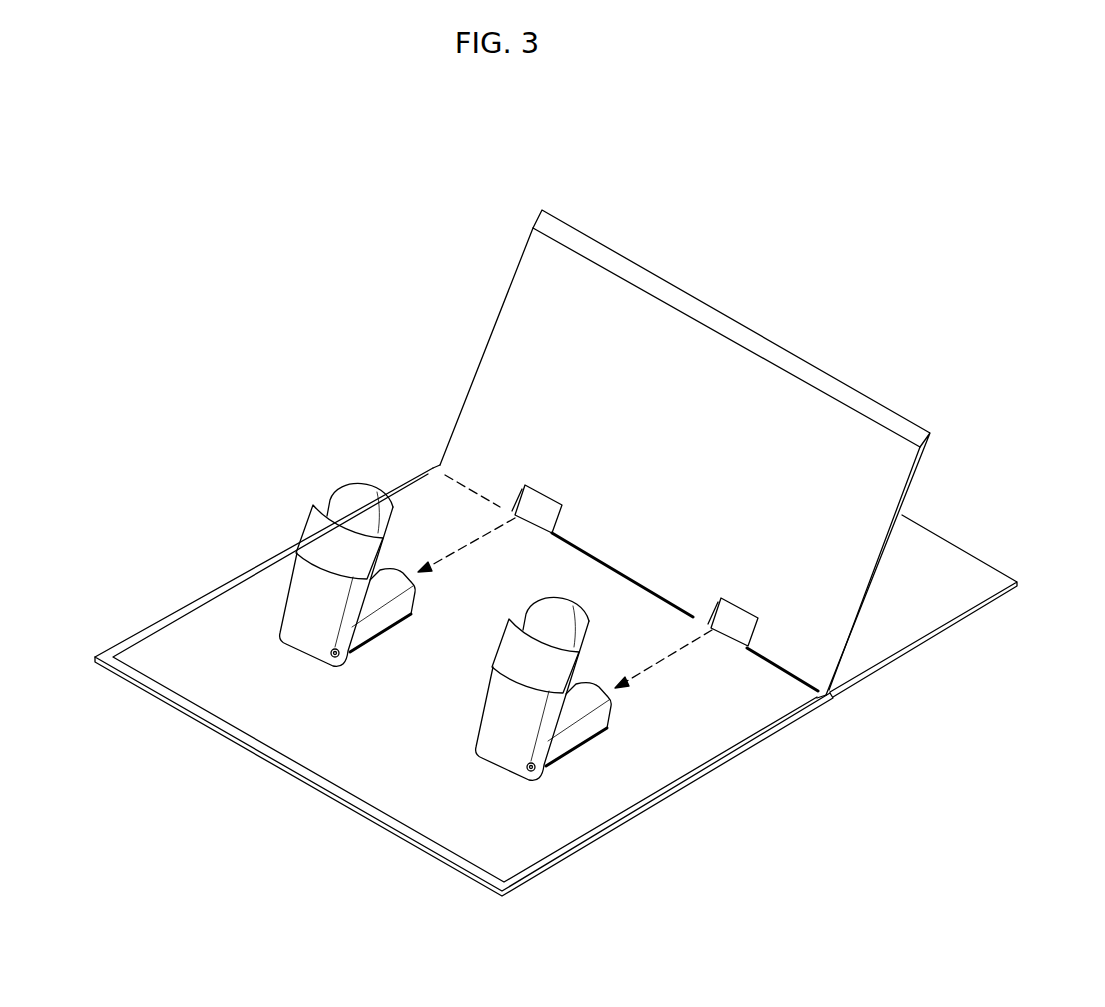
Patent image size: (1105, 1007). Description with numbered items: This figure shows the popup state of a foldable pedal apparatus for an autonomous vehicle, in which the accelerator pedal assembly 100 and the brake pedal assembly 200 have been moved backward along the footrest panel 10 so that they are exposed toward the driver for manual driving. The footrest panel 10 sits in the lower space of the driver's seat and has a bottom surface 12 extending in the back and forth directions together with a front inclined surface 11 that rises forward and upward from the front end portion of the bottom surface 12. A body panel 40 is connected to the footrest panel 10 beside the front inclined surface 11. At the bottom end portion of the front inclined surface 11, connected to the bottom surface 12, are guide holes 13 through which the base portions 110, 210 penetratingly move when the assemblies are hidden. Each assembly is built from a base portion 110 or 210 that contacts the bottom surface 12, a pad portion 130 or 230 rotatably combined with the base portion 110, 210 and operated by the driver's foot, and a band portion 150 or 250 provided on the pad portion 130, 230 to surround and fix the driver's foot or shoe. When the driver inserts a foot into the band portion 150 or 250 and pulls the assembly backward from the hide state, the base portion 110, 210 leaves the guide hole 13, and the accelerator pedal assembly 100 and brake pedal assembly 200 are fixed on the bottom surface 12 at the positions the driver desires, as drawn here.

The footrest panel 10 is at (681, 417).
The front inclined surface 11 is at (703, 360).
The bottom surface 12 is at (357, 758).
The guide hole 13 is at (518, 500).
The body panel 40 is at (905, 608).
The accelerator pedal assembly 100 is at (540, 774).
The base portion 110 is at (587, 727).
The pad portion 130 is at (508, 747).
The band portion 150 is at (518, 653).
The brake pedal assembly 200 is at (261, 641).
The base portion 210 is at (372, 625).
The pad portion 230 is at (350, 497).
The band portion 250 is at (310, 535).